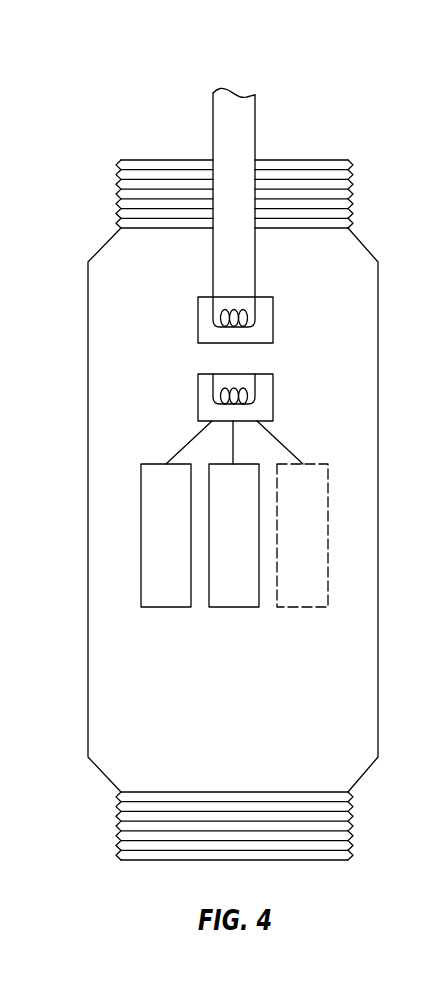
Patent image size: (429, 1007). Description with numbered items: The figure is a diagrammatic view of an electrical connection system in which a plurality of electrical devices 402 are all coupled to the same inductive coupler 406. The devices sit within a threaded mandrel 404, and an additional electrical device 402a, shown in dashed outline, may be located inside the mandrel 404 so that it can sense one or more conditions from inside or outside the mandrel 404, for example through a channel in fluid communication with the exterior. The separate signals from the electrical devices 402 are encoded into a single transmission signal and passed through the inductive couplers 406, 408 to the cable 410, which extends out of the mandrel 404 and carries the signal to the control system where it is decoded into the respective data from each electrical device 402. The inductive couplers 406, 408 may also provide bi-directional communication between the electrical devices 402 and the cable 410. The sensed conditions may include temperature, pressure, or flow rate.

The electrical device 402 is at (165, 593).
The electrical device 402a is at (300, 593).
The mandrel 404 is at (88, 323).
The inductive coupler 406 is at (273, 398).
The inductive coupler 408 is at (273, 323).
The cable 410 is at (238, 268).